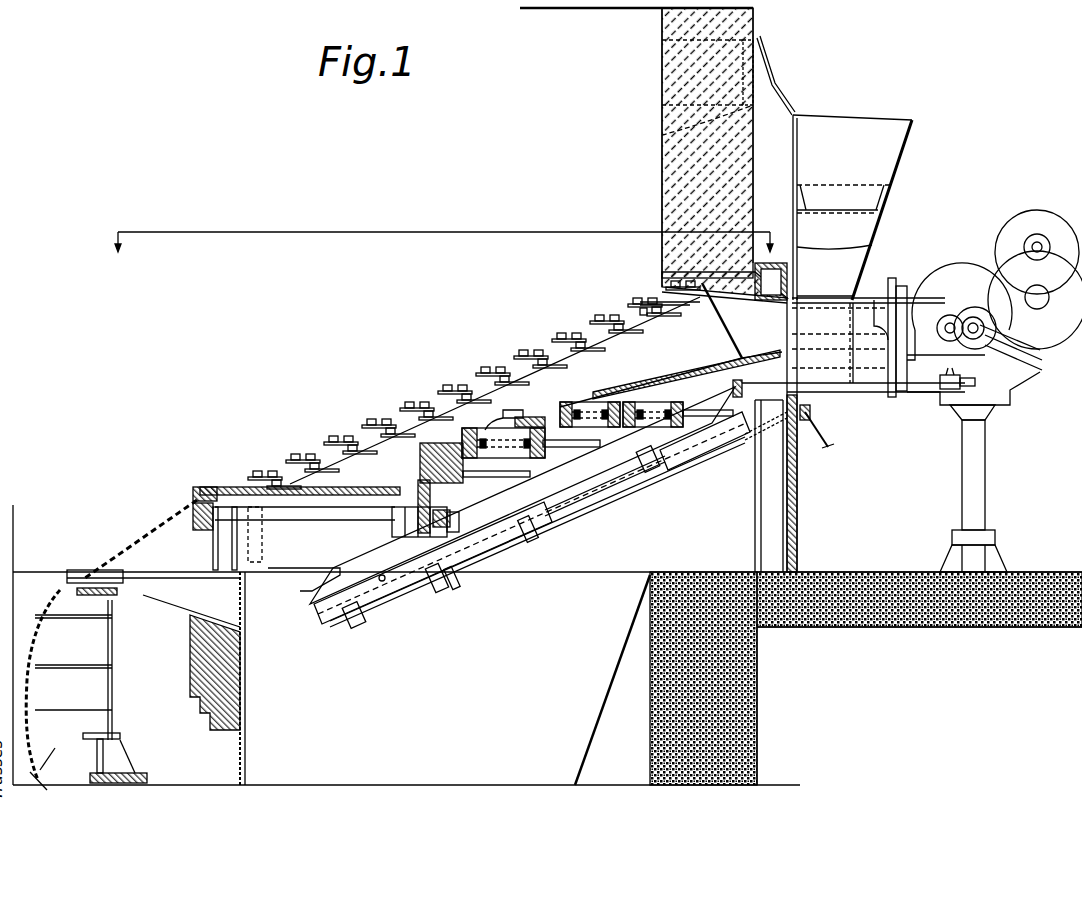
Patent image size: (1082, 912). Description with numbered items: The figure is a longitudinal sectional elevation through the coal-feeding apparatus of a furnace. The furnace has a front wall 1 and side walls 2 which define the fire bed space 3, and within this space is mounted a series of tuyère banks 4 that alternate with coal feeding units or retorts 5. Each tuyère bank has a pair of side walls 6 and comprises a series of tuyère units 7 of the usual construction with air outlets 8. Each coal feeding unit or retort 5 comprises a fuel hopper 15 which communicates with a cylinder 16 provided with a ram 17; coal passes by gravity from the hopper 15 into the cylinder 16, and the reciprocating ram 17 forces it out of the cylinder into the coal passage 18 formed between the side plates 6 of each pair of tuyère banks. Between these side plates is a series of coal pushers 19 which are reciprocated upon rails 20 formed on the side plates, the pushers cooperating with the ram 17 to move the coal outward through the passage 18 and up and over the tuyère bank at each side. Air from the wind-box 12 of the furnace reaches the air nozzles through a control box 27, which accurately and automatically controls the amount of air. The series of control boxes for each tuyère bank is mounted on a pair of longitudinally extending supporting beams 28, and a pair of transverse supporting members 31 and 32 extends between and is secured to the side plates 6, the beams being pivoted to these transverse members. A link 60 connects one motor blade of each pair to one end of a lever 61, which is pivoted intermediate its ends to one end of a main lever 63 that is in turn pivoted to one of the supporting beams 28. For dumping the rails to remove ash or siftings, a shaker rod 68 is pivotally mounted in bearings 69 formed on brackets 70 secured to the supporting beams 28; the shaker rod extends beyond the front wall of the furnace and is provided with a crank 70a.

The front wall 1 is at (662, 155).
The side walls 2 is at (438, 239).
The fire bed space 3 is at (446, 392).
The tuyère banks 4 is at (474, 398).
The coal feeding unit or retort 5 is at (495, 390).
The side walls of tuyère bank 6 is at (577, 345).
The tuyère units 7 is at (384, 420).
The air outlets 8 is at (495, 368).
The wind-box 12 is at (547, 645).
The fuel hopper 15 is at (852, 207).
The cylinder 16 is at (842, 370).
The ram 17 is at (878, 285).
The coal passage 18 is at (671, 345).
The coal pushers 19 is at (562, 402).
The rails 20 is at (520, 428).
The control box 27 is at (585, 478).
The supporting beams 28 is at (322, 614).
The transverse supporting member 31 is at (300, 585).
The transverse supporting member 32 is at (748, 425).
The link 60 is at (383, 582).
The lever 61 is at (676, 470).
The main lever 63 is at (528, 541).
The shaker rod 68 is at (590, 505).
The bearings 69 is at (651, 470).
The brackets 70 is at (447, 580).
The crank 70a is at (820, 447).